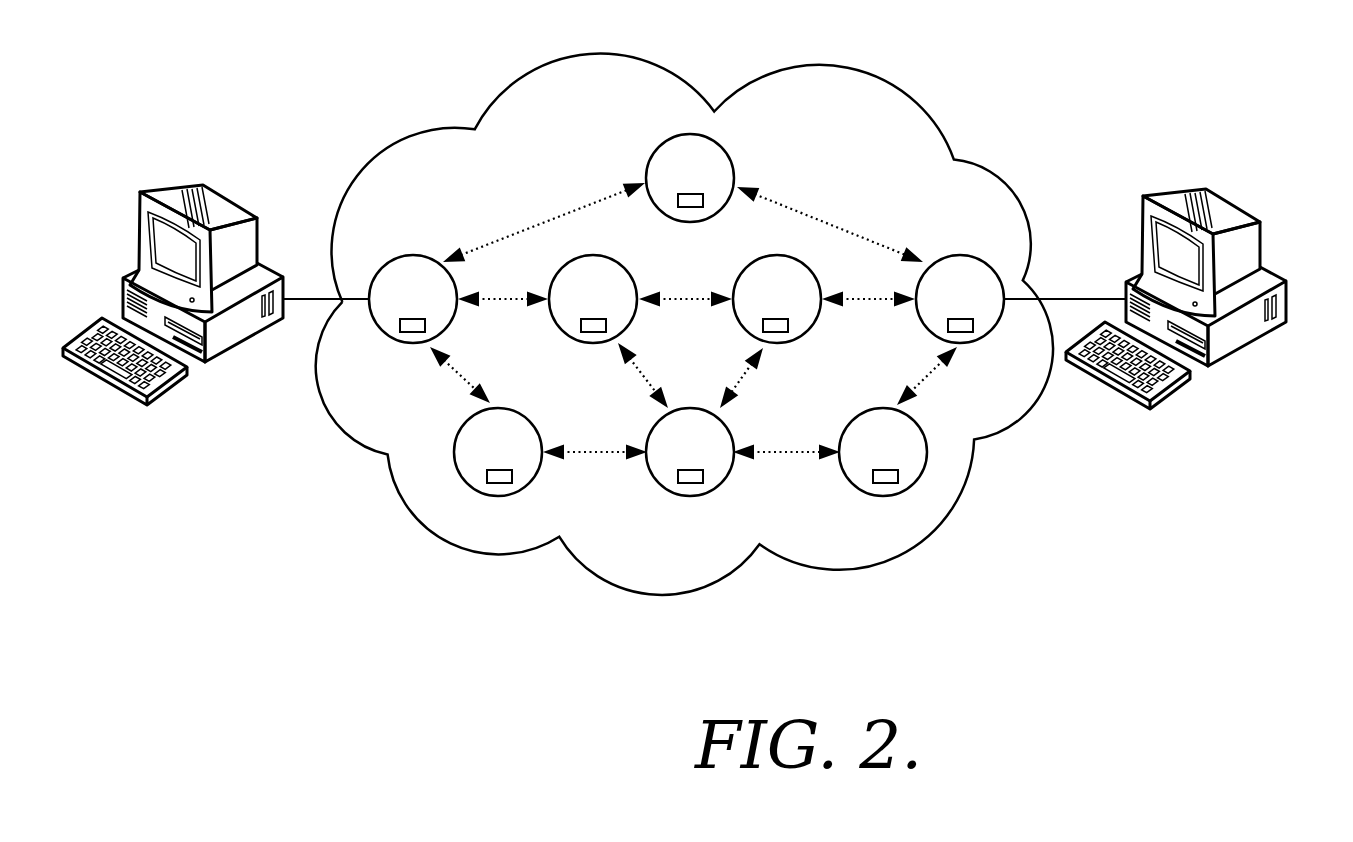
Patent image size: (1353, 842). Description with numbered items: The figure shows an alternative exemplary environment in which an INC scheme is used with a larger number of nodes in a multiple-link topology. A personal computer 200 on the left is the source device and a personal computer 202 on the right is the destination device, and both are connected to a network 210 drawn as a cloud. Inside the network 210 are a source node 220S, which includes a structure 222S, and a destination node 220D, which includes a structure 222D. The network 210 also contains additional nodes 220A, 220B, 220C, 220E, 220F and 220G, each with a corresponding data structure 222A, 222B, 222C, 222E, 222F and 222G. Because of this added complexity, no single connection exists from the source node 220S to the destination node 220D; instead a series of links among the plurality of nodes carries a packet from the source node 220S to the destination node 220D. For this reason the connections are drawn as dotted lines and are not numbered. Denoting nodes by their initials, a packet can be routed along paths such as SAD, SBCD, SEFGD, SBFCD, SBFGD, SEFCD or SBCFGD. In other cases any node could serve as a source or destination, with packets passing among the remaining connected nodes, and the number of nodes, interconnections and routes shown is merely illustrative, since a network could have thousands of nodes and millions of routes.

The personal computer 200 is at (140, 232).
The personal computer 202 is at (1261, 250).
The network 210 is at (826, 66).
The source node 220S is at (410, 256).
The node 220A is at (664, 143).
The node 220B is at (590, 343).
The node 220C is at (758, 260).
The destination node 220D is at (957, 256).
The node 220E is at (492, 496).
The node 220F is at (682, 496).
The node 220G is at (858, 495).
The structure 222S is at (400, 326).
The data structure 222A is at (679, 206).
The data structure 222B is at (606, 327).
The data structure 222C is at (788, 327).
The structure 222D is at (973, 327).
The data structure 222E is at (512, 477).
The data structure 222F is at (703, 477).
The data structure 222G is at (898, 477).